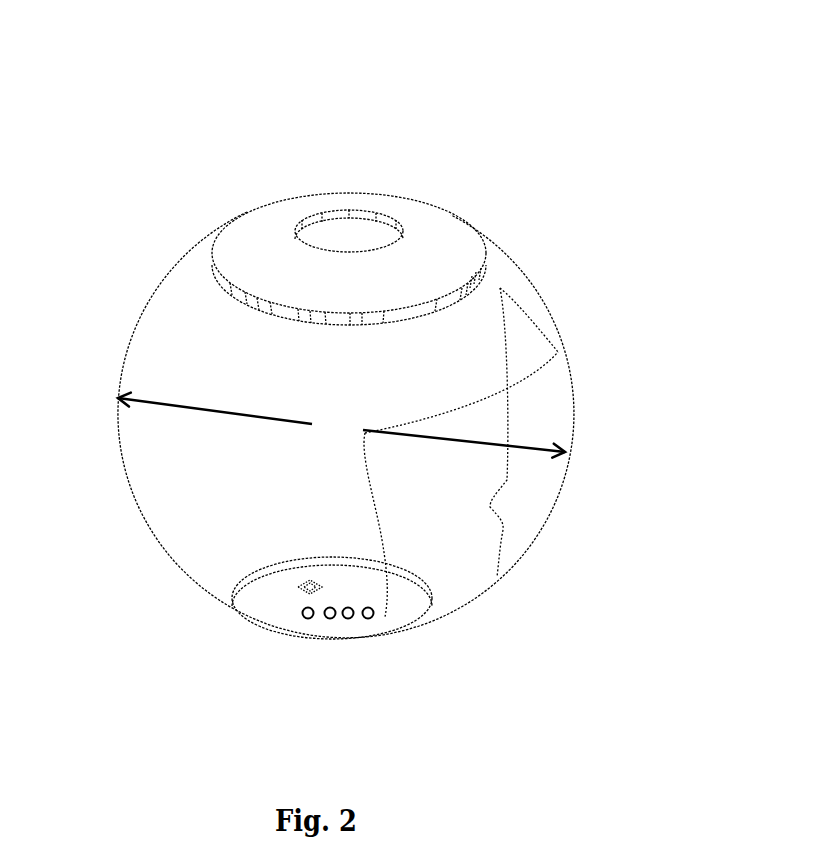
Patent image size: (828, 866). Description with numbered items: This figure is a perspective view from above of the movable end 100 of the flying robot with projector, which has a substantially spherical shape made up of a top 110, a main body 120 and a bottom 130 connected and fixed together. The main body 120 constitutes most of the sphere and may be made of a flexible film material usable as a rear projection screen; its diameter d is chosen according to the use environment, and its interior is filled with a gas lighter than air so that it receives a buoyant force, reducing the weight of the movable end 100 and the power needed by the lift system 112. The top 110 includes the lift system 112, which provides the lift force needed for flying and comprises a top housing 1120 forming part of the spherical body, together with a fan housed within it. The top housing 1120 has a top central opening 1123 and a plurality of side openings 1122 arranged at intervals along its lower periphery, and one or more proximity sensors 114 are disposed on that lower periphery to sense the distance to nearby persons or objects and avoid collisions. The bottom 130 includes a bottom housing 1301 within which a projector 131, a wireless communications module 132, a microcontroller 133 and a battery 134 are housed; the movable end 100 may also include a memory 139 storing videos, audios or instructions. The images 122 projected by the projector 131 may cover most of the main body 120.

The movable end 100 is at (321, 370).
The top 110 is at (380, 172).
The top housing 1120 is at (433, 243).
The lift system 112 is at (382, 193).
The proximity sensor 114 is at (465, 273).
The side openings 1122 is at (335, 305).
The top central opening 1123 is at (338, 237).
The main body 120 is at (108, 402).
The images 122 is at (547, 375).
The bottom 130 is at (315, 639).
The bottom housing 1301 is at (410, 632).
The projector 131 is at (302, 602).
The memory 139 is at (307, 621).
The wireless communications module 132 is at (328, 623).
The microcontroller 133 is at (353, 623).
The battery 134 is at (372, 623).